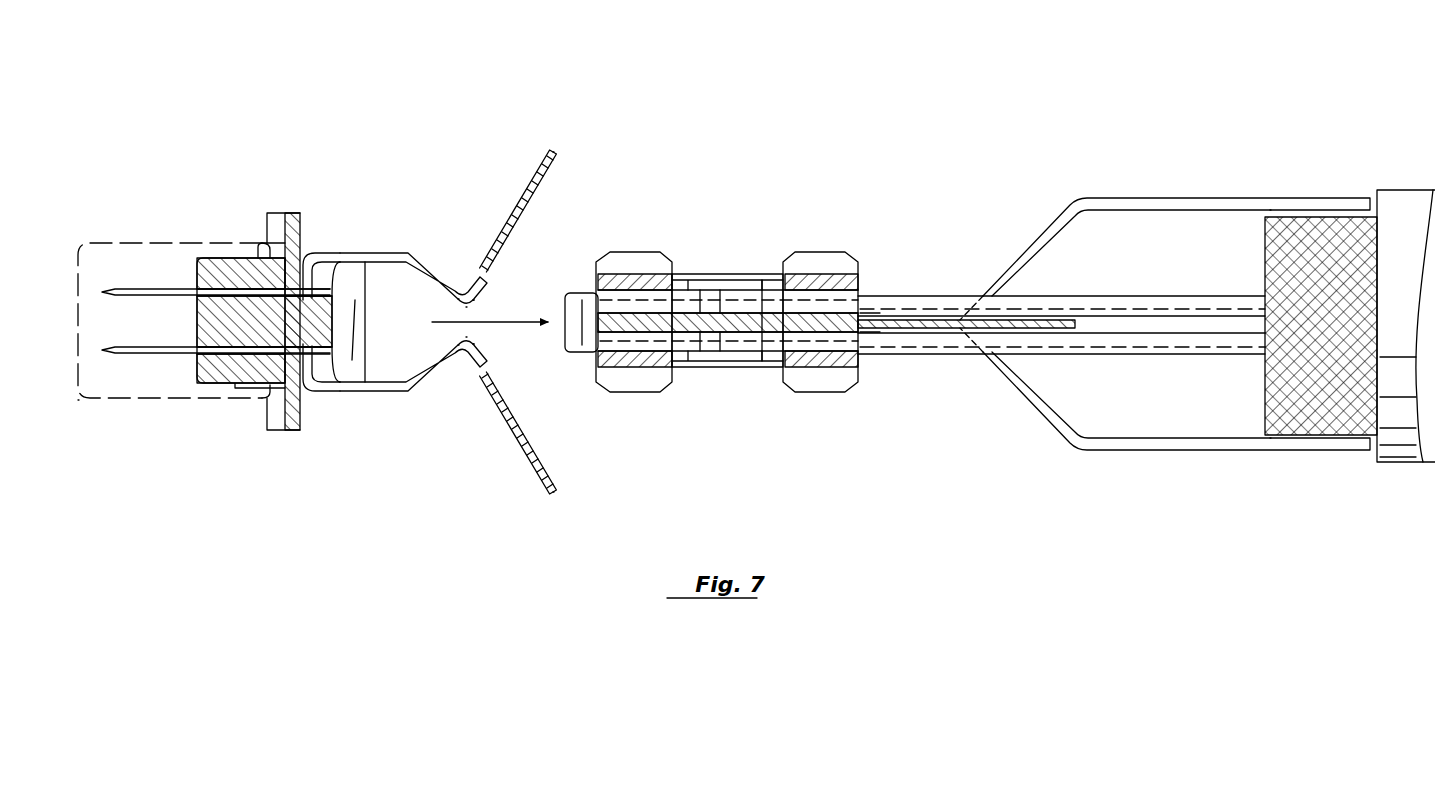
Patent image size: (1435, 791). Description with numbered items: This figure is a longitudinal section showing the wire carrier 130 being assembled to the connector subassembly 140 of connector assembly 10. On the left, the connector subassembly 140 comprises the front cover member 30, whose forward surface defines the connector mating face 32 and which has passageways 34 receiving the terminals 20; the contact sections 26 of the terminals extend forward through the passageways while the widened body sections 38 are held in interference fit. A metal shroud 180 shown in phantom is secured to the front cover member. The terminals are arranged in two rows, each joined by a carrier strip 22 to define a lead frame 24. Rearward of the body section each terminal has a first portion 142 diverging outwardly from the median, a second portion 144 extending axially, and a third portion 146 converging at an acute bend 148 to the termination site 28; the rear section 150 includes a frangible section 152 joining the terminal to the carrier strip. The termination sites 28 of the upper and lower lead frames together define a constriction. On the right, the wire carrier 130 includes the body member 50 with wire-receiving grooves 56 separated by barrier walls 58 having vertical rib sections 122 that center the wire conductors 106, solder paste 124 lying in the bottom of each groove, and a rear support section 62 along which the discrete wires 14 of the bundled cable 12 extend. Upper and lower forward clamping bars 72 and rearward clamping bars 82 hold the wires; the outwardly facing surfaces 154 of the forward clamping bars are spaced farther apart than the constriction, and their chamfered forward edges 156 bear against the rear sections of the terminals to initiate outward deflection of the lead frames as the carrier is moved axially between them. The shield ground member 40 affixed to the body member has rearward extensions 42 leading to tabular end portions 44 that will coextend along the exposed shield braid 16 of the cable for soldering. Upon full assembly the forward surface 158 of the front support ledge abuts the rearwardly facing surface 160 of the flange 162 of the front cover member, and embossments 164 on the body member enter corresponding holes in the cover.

The connector assembly 10 is at (667, 118).
The bundled cable 12 is at (1410, 188).
The discrete wires 14 is at (1105, 335).
The shield braid 16 is at (1290, 275).
The terminals 20 is at (150, 302).
The carrier strip 22 is at (520, 195).
The lead frame 24 is at (553, 150).
The contact section 26 is at (170, 360).
The termination site 28 is at (483, 302).
The front cover member 30 is at (213, 388).
The connector mating face 32 is at (200, 268).
The passageways 34 is at (233, 347).
The widened body sections 38 is at (292, 262).
The shield ground member 40 is at (1032, 332).
The rearward extensions 42 is at (1040, 232).
The tabular end portions 44 is at (1283, 212).
The body member 50 is at (826, 308).
The wire-receiving grooves 56 is at (735, 367).
The barrier walls 58 is at (762, 367).
The rear support section 62 is at (862, 297).
The forward clamping bars 72 is at (630, 252).
The rearward clamping bars 82 is at (826, 252).
The wire conductors 106 is at (740, 274).
The vertical rib sections 122 is at (778, 274).
The solder paste 124 is at (715, 305).
The wire carrier 130 is at (890, 165).
The connector subassembly 140 is at (210, 162).
The first portion 142 is at (320, 262).
The second portion 144 is at (430, 372).
The third portion 146 is at (432, 275).
The acute bend 148 is at (472, 278).
The rear section 150 is at (462, 275).
The frangible section 152 is at (468, 275).
The outwardly facing surfaces 154 is at (648, 252).
The chamfered forward edges 156 is at (598, 275).
The forward surface 158 is at (565, 300).
The rearwardly facing surface 160 is at (352, 360).
The flange 162 is at (355, 300).
The embossments 164 is at (582, 340).
The metal shroud 180 is at (148, 243).